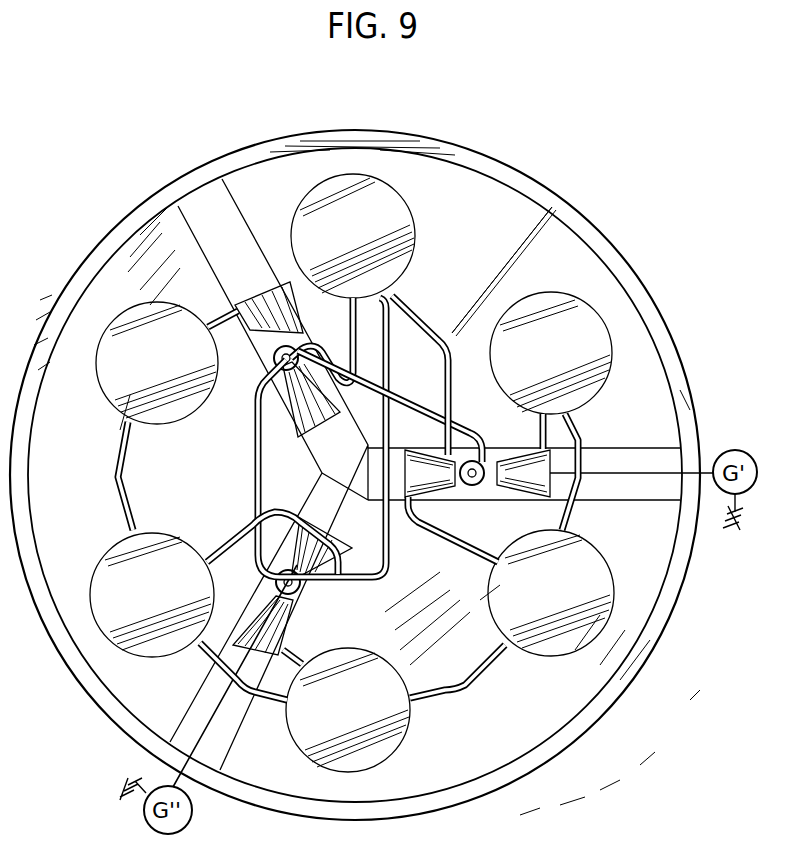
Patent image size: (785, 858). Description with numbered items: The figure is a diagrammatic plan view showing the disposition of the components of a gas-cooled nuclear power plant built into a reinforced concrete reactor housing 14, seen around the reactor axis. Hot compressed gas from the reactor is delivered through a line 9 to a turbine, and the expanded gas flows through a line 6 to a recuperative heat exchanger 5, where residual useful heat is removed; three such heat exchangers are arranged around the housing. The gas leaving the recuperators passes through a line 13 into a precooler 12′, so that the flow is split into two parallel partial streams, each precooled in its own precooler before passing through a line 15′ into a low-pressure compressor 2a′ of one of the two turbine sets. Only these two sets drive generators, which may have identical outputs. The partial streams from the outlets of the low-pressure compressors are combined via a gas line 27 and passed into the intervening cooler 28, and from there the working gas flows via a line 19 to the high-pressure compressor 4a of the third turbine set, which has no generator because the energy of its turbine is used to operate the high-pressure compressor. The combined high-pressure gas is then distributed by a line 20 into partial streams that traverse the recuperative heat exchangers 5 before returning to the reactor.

The recuperative heat exchanger 5 is at (100, 370).
The line 6 is at (212, 322).
The line 9 is at (273, 360).
The precooler 12′ is at (593, 556).
The line 13 is at (118, 450).
The reinforced concrete reactor housing 14 is at (538, 214).
The line 15′ is at (216, 556).
The line 19 is at (350, 330).
The line 20 is at (405, 392).
The gas line 27 is at (418, 325).
The intervening cooler 28 is at (400, 233).
The low-pressure compressor 2a′ is at (408, 452).
The high-pressure compressor 4a is at (335, 420).